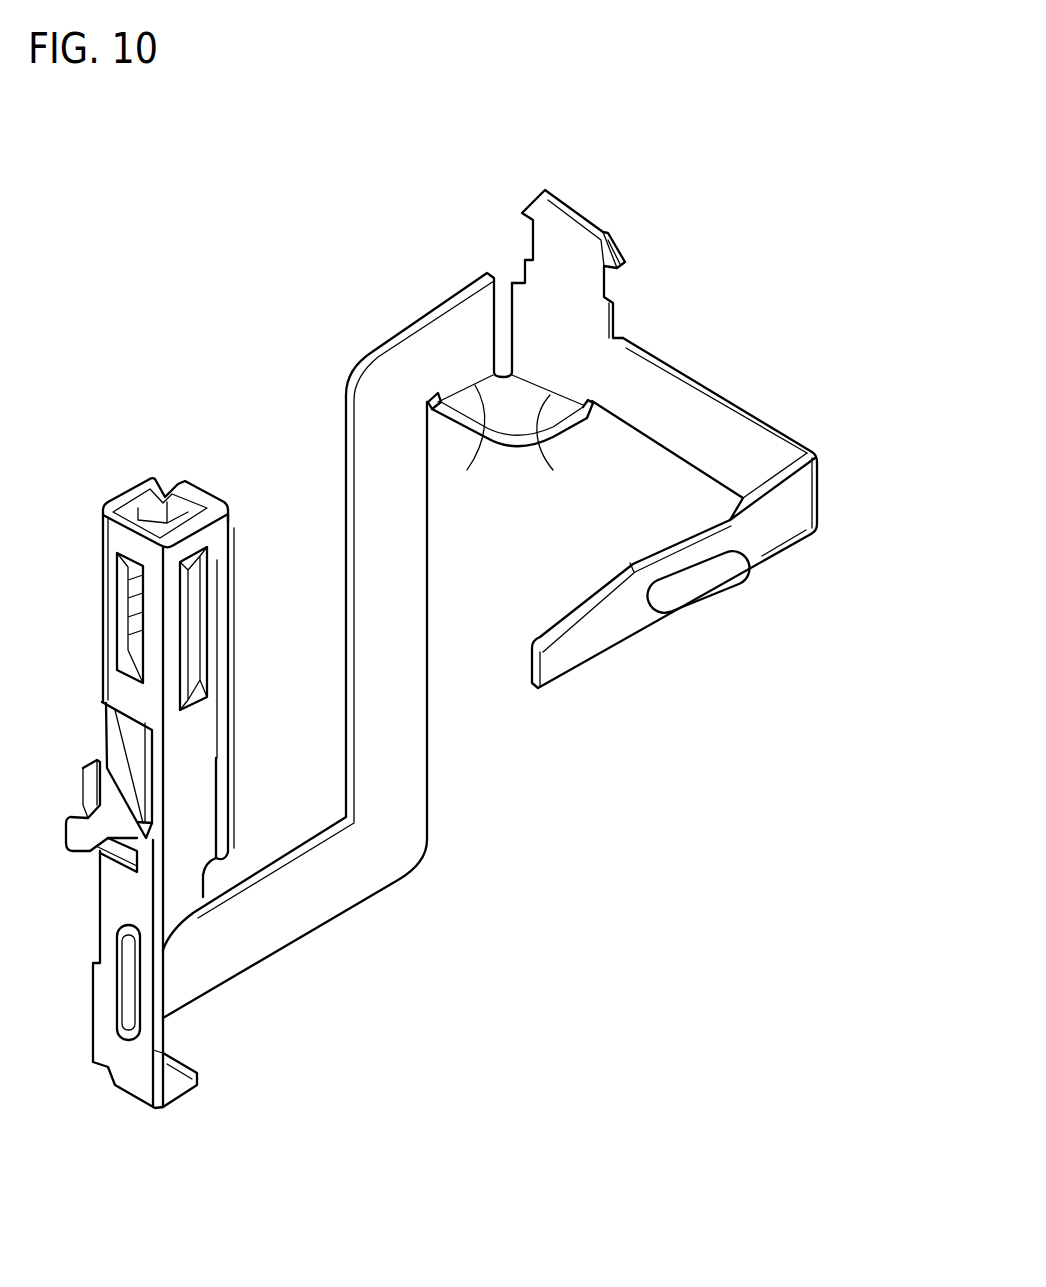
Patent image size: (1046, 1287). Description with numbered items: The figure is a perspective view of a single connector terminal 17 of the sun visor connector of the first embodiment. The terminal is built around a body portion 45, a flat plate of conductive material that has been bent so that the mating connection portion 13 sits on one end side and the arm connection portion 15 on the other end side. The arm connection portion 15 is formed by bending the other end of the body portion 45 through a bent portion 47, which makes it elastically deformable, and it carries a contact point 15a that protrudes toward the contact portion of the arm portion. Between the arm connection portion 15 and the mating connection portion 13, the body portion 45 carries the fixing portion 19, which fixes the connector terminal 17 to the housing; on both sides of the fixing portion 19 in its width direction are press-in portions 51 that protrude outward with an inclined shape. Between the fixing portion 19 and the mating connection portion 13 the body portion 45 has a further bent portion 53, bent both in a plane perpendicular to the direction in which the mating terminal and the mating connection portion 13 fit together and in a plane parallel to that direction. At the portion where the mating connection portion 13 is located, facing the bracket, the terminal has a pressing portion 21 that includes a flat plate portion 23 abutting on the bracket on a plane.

The mating connection portion 13 is at (126, 480).
The arm connection portion 15 is at (637, 652).
The contact point 15a is at (697, 582).
The connector terminal 17 is at (745, 190).
The fixing portion 19 is at (583, 194).
The pressing portion 21 is at (178, 1107).
The flat plate portion 23 is at (186, 1061).
The body portion 45 is at (437, 817).
The bent portion 47 is at (819, 490).
The press-in portions 51 is at (531, 203).
The bent portion 53 is at (467, 470).